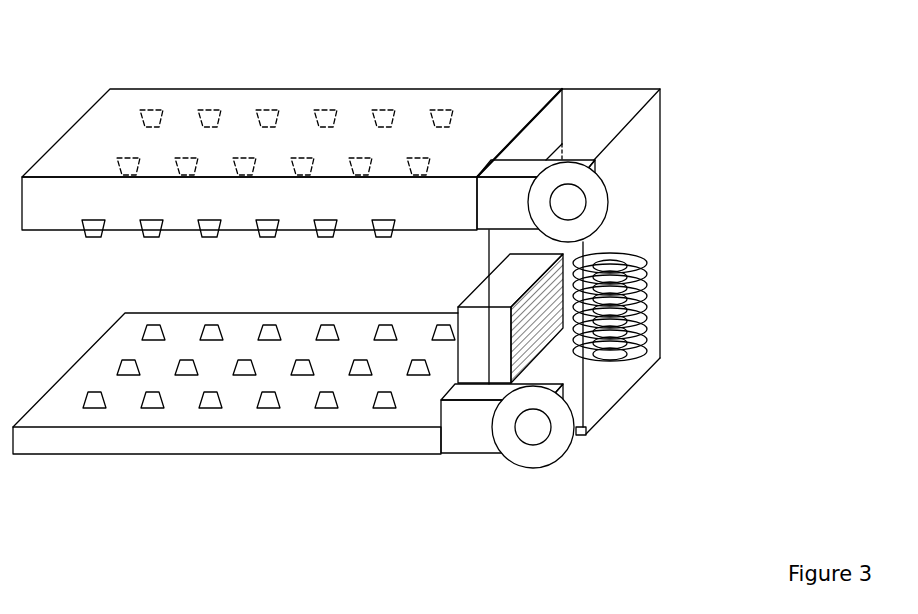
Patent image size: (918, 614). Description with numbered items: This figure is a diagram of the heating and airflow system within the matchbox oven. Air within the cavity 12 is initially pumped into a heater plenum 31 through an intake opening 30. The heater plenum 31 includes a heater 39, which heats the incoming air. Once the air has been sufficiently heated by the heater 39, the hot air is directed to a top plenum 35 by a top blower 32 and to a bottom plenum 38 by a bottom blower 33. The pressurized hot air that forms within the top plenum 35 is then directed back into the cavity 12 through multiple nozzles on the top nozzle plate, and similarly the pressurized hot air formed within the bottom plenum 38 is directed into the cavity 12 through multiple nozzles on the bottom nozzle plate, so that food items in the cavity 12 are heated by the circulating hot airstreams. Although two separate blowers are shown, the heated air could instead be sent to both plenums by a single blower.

The cavity 12 is at (275, 284).
The intake opening 30 is at (498, 292).
The heater plenum 31 is at (660, 223).
The top blower 32 is at (610, 200).
The bottom blower 33 is at (587, 428).
The top plenum 35 is at (424, 88).
The bottom plenum 38 is at (305, 454).
The heater 39 is at (647, 315).